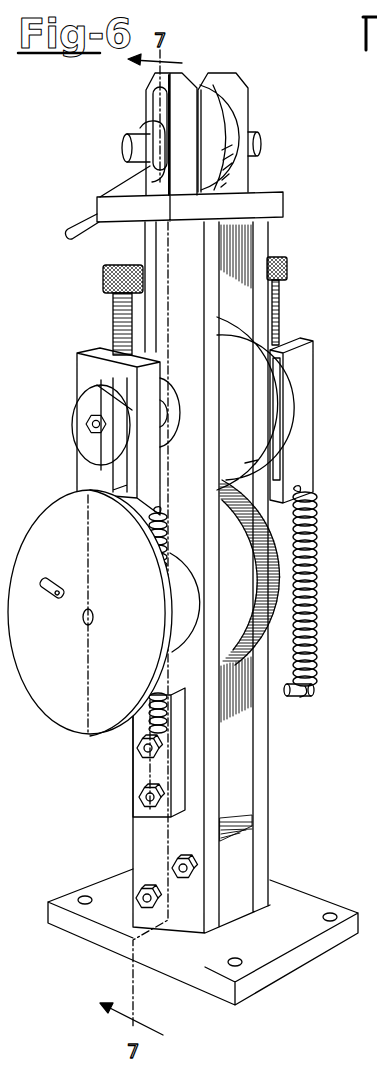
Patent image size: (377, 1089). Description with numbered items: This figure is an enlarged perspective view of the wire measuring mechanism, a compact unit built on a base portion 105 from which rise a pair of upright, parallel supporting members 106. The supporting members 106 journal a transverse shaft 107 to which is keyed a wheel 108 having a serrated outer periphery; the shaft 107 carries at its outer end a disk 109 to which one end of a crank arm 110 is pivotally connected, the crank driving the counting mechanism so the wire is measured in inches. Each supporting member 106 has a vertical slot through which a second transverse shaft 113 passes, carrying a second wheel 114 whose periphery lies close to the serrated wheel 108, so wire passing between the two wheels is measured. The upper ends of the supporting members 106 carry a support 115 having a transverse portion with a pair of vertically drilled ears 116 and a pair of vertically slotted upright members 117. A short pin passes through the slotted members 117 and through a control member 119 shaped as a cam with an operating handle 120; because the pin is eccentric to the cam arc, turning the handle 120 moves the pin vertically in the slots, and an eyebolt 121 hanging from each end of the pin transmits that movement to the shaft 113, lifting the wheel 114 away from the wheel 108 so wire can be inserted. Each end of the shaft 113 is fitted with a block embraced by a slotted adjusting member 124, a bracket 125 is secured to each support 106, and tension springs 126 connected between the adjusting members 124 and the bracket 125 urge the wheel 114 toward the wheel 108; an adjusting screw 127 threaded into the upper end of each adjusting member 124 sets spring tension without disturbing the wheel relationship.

The base portion 105 is at (308, 952).
The upright supporting members 106 is at (260, 256).
The transverse shaft 107 is at (95, 620).
The serrated wheel 108 is at (268, 603).
The disk 109 is at (66, 712).
The crank arm 110 is at (52, 595).
The transverse shaft 113 is at (88, 420).
The second rotatable element or wheel 114 is at (262, 426).
The support 115 is at (261, 97).
The vertically drilled ears 116 is at (276, 208).
The vertically slotted upright members 117 is at (147, 92).
The control member 119 is at (232, 133).
The operating handle 120 is at (76, 222).
The eyebolt 121 is at (150, 247).
The adjusting member 124 is at (95, 481).
The bracket 125 is at (145, 750).
The tension springs 126 is at (165, 530).
The adjusting screw 127 is at (113, 316).